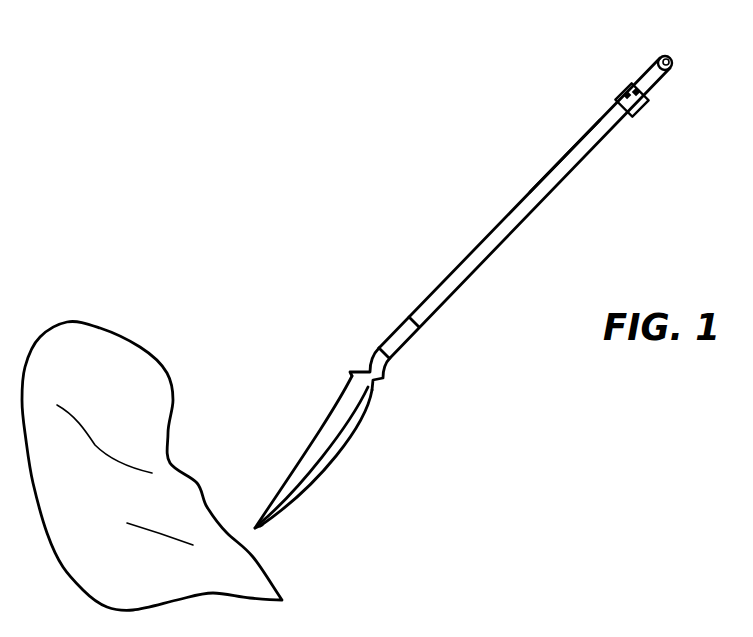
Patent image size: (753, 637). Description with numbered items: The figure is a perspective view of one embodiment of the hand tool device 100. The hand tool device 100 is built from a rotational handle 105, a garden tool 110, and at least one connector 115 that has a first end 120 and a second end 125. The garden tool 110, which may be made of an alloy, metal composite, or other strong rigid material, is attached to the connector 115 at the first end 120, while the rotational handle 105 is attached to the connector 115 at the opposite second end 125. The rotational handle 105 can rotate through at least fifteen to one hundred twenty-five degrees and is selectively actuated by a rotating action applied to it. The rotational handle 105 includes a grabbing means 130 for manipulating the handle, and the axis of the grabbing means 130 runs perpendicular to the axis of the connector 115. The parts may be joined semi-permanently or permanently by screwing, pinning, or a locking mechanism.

The hand tool device 100 is at (354, 131).
The rotational handle 105 is at (649, 61).
The garden tool 110 is at (322, 442).
The connector 115 is at (468, 278).
The first end 120 is at (402, 347).
The second end 125 is at (594, 147).
The grabbing means 130 is at (672, 68).